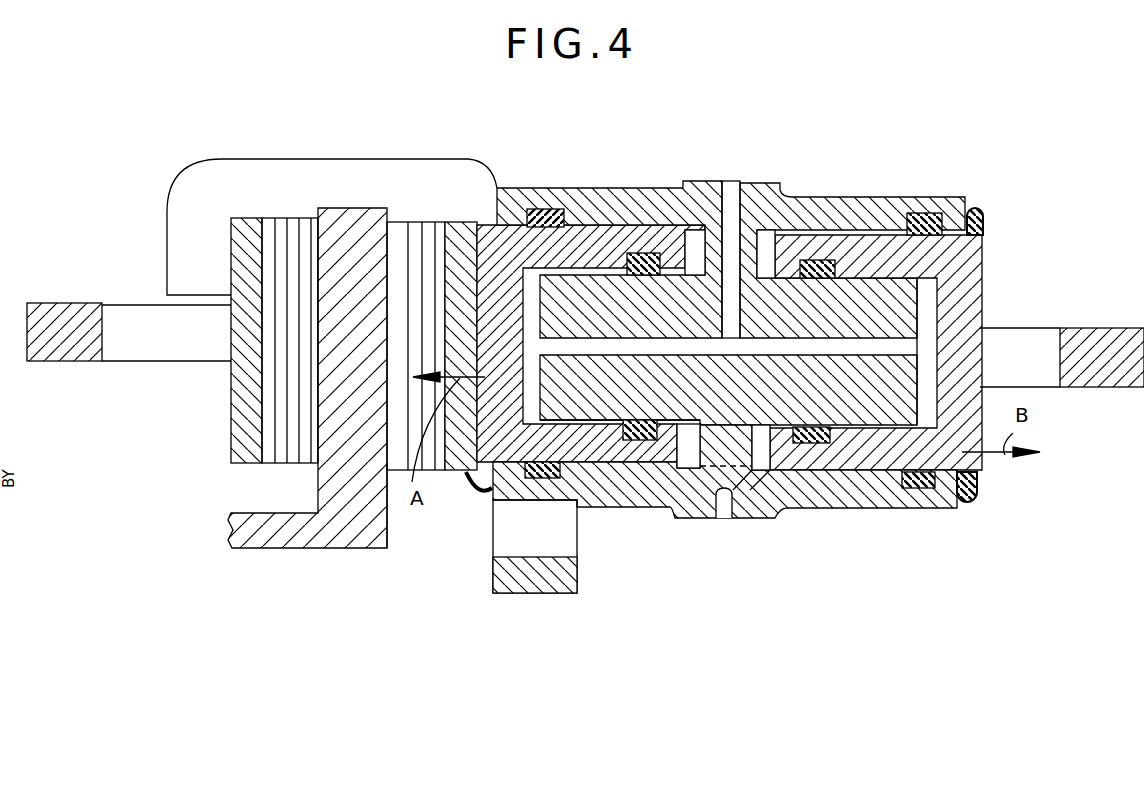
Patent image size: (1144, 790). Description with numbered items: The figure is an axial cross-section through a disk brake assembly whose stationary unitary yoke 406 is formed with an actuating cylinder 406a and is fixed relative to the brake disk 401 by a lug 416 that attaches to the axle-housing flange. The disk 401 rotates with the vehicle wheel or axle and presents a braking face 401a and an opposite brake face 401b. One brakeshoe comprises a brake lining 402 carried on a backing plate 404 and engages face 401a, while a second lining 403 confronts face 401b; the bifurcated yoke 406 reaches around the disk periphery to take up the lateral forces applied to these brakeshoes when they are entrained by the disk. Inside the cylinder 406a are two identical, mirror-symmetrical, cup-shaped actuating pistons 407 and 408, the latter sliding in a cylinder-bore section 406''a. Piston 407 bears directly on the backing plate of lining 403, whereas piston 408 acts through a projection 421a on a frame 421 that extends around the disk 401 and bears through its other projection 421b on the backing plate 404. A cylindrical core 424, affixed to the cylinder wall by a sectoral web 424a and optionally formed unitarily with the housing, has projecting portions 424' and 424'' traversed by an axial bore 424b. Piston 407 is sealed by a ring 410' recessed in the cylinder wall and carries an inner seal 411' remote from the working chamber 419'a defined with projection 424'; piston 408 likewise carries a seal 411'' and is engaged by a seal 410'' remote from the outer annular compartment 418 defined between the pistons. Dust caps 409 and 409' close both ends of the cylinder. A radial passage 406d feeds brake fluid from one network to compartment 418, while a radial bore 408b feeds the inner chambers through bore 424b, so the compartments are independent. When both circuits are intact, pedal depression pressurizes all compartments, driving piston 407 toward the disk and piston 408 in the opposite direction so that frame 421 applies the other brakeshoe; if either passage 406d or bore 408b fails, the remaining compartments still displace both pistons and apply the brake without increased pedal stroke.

The brake disk 401 is at (349, 218).
The braking face 401a is at (310, 440).
The brake face 401b is at (389, 515).
The brake lining 402 is at (279, 222).
The brake lining 403 is at (418, 228).
The backing plate 404 is at (240, 424).
The unitary yoke 406 is at (332, 208).
The actuating cylinder 406a is at (610, 493).
The radial passage 406d is at (727, 512).
The cylinder-bore section 406''a is at (852, 252).
The actuating piston 407 is at (580, 240).
The actuating piston 408 is at (883, 250).
The radial bore 408b is at (735, 195).
The dust cap 409 is at (466, 503).
The dust cap 409' is at (1008, 352).
The sealing ring 410' is at (549, 302).
The seal 410'' is at (943, 327).
The inner seal 411' is at (651, 298).
The seal 411'' is at (812, 405).
The lug 416 is at (503, 585).
The outer annular compartment 418 is at (688, 462).
The working chamber 419'a is at (769, 275).
The frame 421 is at (1089, 385).
The projection 421a is at (1015, 332).
The projection 421b is at (68, 312).
The cylindrical core 424 is at (789, 207).
The sectoral web 424a is at (706, 243).
The bore 424b is at (875, 358).
The core projecting portion 424' is at (620, 482).
The core projecting portion 424'' is at (894, 414).